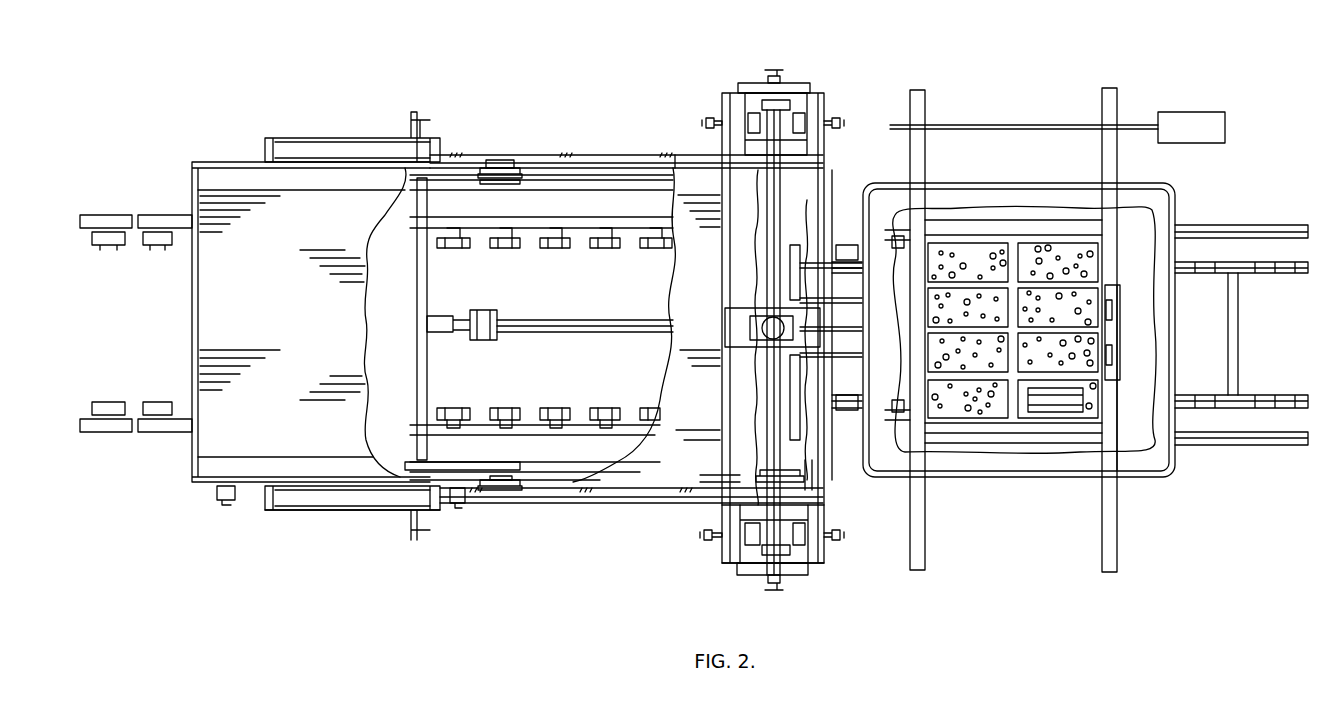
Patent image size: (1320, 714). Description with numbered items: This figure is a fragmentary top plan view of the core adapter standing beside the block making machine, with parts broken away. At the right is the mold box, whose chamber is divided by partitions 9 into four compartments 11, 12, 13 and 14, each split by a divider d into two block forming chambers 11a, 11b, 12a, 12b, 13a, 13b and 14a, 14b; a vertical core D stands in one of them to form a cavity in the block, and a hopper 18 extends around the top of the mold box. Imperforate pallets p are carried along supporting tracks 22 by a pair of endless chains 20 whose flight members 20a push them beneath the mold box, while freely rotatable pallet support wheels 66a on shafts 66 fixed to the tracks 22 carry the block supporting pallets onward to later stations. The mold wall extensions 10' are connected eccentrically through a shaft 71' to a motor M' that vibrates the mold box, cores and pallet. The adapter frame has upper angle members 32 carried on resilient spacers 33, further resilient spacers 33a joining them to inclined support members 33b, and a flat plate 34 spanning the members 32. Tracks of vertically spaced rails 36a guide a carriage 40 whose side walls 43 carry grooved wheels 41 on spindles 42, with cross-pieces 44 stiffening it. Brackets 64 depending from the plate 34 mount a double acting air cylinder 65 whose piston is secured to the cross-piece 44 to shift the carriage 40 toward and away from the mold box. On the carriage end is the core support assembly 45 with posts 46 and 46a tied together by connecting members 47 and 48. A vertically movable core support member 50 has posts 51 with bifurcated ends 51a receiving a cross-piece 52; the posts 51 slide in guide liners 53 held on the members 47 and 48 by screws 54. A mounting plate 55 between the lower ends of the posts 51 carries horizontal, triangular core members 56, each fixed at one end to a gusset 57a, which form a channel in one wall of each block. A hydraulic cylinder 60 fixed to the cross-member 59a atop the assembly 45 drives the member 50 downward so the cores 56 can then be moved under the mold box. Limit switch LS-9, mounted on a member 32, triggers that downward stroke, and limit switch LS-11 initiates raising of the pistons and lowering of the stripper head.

The core support assembly 45 is at (719, 72).
The guide liners 53 is at (752, 100).
The connecting members 47 is at (786, 88).
The bifurcated ends 51a is at (798, 120).
The vertically extending posts 51 is at (762, 106).
The screws 54 is at (846, 128).
The spindle or shaft 42 is at (490, 168).
The wheels 41 is at (514, 162).
The side walls 43 is at (618, 163).
The resilient spacers 33a is at (273, 154).
The resilient spacers 33 is at (425, 157).
The support members 33b is at (346, 509).
The upper end connecting angle members 32 is at (324, 175).
The rails 36a is at (578, 182).
The plate 34 is at (279, 300).
The cross-piece 44 is at (426, 280).
The brackets 64 is at (488, 315).
The air cylinder 65 is at (578, 320).
The pallet support wheels 66a is at (470, 402).
The shafts 66 is at (412, 432).
The limit switch LS-11 is at (230, 503).
The limit switch LS-9 is at (460, 506).
The carriage 40 is at (588, 514).
The mounting plate 55 is at (768, 240).
The core support member 50 is at (752, 283).
The cross-member 59a is at (730, 318).
The hydraulic cylinder 60 is at (760, 328).
The cross-piece 52 is at (770, 398).
The gusset 57a is at (846, 325).
The connecting members 48 is at (722, 430).
The post 46 is at (730, 552).
The post 46a is at (812, 553).
The core members 56 is at (895, 368).
The extensions 10' is at (1033, 320).
The shaft 71' is at (1038, 106).
The motor M' is at (1191, 127).
The hopper 18 is at (1186, 192).
The compartment 11 is at (1088, 243).
The block forming chamber 11a is at (972, 243).
The block forming chamber 11b is at (1036, 243).
The block forming chamber 12a is at (966, 284).
The block forming chamber 12b is at (1045, 284).
The block forming chamber 13a is at (966, 329).
The block forming chamber 13b is at (1045, 329).
The block forming chamber 14a is at (966, 374).
The block forming chamber 14b is at (1045, 374).
The partitions 9 is at (1098, 290).
The compartment 12 is at (1098, 304).
The compartment 13 is at (1098, 337).
The compartment 14 is at (1098, 386).
The core D is at (1085, 400).
The divider d is at (1012, 405).
The pallets p is at (1072, 438).
The supporting tracks 22 is at (1232, 238).
The endless chains 20 is at (1240, 272).
The flight members 20a is at (1238, 334).